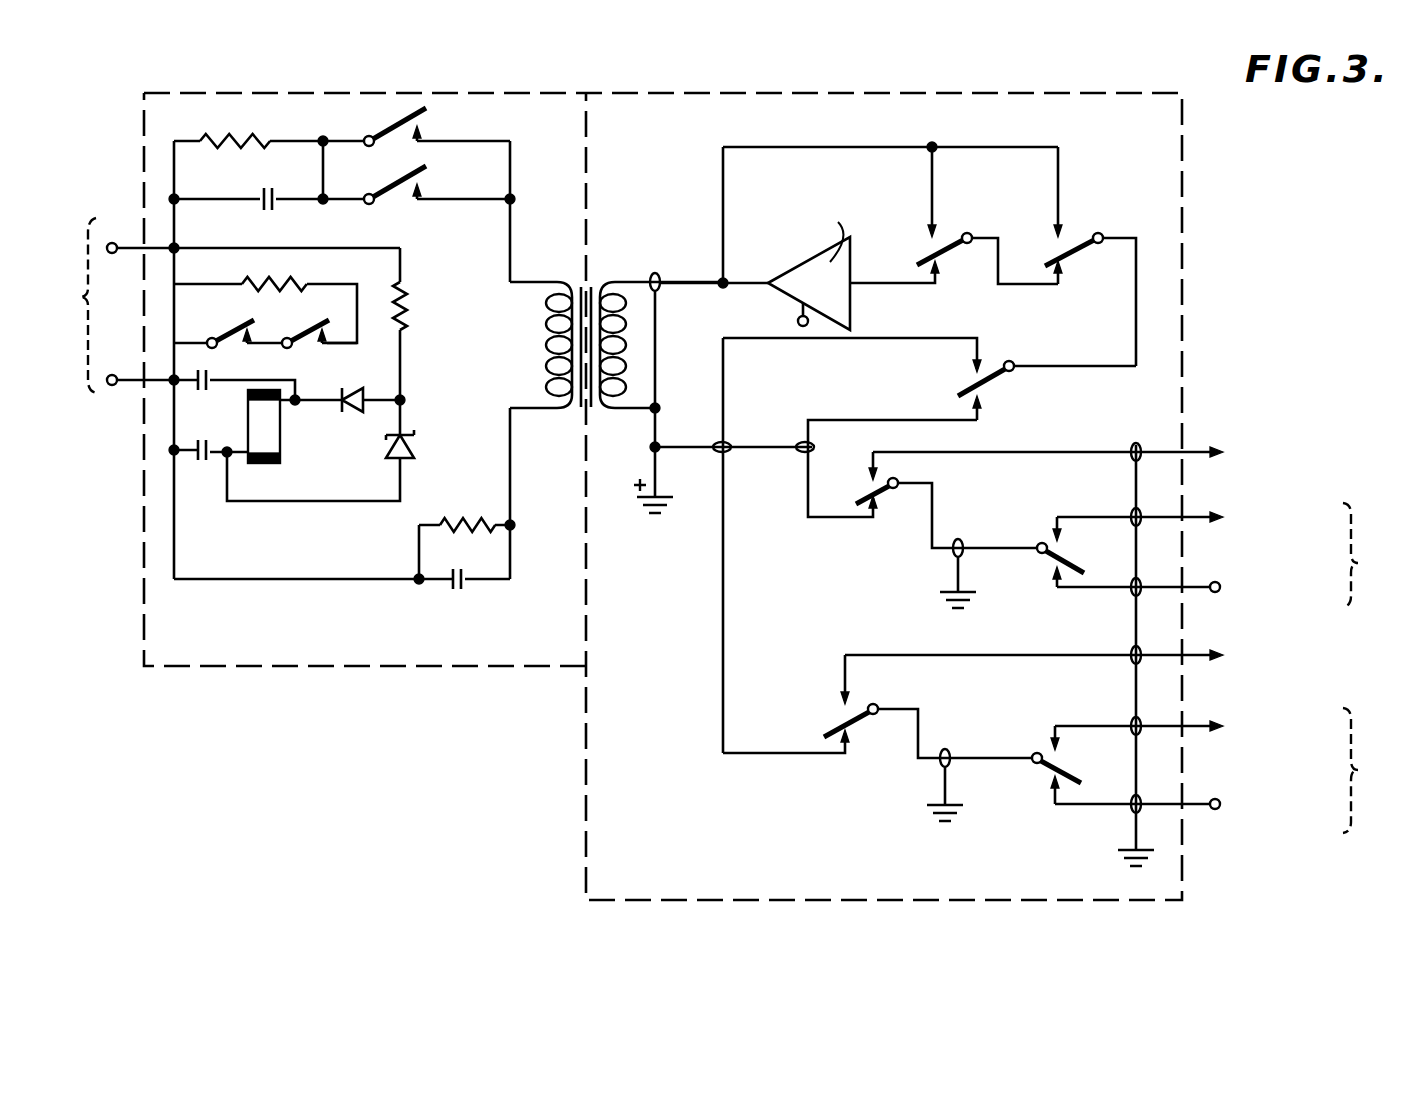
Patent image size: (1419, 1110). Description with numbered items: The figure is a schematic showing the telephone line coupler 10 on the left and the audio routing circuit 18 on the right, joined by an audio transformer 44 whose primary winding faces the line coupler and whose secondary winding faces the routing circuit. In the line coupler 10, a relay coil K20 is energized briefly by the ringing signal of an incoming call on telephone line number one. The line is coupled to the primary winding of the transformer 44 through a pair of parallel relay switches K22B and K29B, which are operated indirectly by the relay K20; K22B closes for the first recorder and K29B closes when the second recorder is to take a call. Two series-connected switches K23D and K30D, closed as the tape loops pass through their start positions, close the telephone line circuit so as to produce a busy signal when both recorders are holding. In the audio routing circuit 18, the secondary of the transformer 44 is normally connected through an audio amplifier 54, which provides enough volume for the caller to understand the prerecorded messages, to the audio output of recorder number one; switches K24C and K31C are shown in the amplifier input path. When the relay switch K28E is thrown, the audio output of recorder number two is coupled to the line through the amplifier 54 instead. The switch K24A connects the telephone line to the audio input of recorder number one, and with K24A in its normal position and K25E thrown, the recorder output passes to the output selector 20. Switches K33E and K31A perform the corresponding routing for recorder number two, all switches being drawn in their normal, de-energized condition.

The line coupler 10 is at (547, 668).
The audio routing circuit 18 is at (1130, 95).
The audio transformer 44 is at (597, 282).
The audio amplifier 54 is at (838, 302).
The output selector 20 is at (1119, 556).
The relay coil K20 is at (272, 440).
The relay switch K29B is at (408, 118).
The relay switch K22B is at (407, 186).
The relay switch K23D is at (233, 326).
The relay switch K30D is at (309, 333).
The relay switch K24C is at (948, 234).
The relay switch K31C is at (1079, 232).
The relay switch K28E is at (993, 378).
The relay switch K25E is at (882, 503).
The relay switch K24A is at (1042, 556).
The relay switch K33E is at (858, 727).
The relay switch K31A is at (1045, 768).